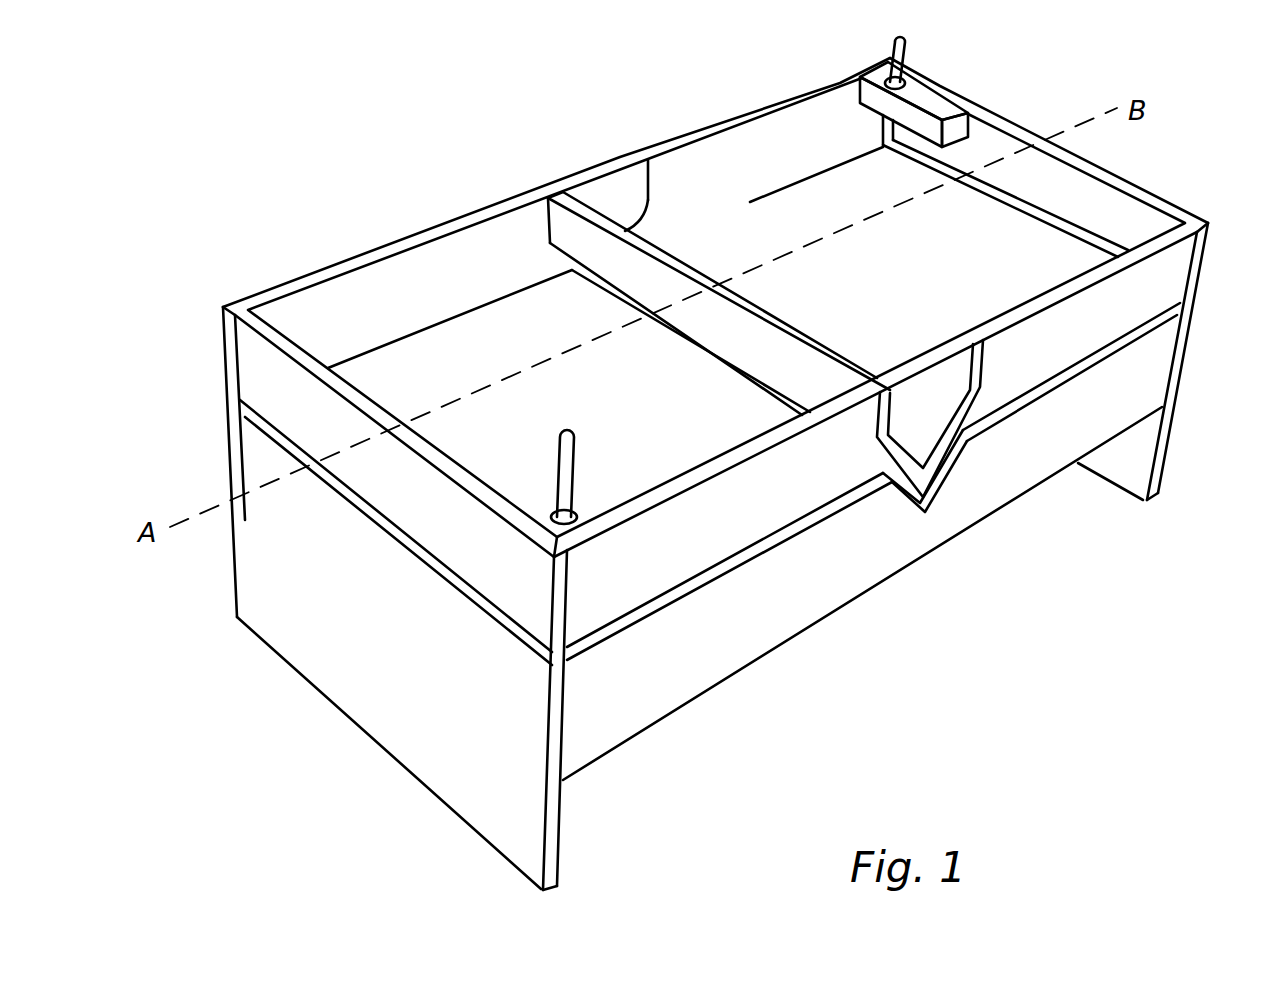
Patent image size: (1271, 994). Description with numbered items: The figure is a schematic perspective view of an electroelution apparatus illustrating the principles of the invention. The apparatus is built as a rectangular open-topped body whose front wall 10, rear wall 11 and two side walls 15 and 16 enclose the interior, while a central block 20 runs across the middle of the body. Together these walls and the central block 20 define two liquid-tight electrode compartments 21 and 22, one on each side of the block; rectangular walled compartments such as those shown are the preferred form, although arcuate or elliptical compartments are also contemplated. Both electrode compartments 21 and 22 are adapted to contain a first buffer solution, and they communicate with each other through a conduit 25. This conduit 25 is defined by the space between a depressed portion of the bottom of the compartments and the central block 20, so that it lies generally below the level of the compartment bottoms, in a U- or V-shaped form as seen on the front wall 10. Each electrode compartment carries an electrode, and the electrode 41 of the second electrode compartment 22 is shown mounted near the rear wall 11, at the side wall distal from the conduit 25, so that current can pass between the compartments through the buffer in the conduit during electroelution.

The front wall 10 is at (602, 737).
The rear wall 11 is at (333, 270).
The side wall 15 is at (288, 627).
The side wall 16 is at (1125, 187).
The central block 20 is at (719, 303).
The electrode compartment 21 is at (452, 397).
The electrode compartment 22 is at (876, 188).
The conduit 25 is at (928, 482).
The electrode 41 is at (952, 167).